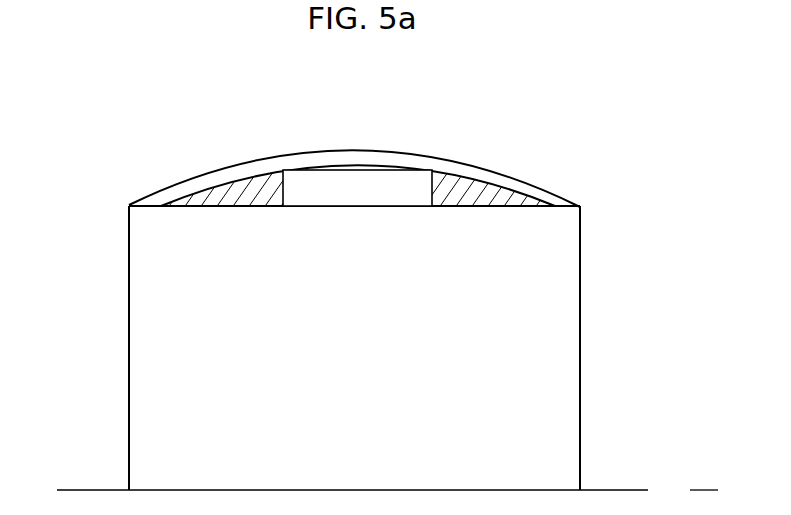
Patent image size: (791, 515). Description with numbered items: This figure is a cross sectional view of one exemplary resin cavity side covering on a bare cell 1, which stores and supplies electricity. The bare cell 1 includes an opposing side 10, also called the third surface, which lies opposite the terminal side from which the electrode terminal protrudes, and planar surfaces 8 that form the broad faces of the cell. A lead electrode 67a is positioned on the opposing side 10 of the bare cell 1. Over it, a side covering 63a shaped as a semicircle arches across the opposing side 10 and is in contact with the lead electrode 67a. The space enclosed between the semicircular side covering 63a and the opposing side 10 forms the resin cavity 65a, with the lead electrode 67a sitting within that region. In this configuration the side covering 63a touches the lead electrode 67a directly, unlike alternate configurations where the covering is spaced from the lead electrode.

The bare cell 1 is at (590, 295).
The planar surfaces 8 is at (128, 343).
The opposing side 10 is at (193, 201).
The side covering 63a is at (455, 160).
The resin cavity 65a is at (508, 203).
The lead electrode 67a is at (356, 185).